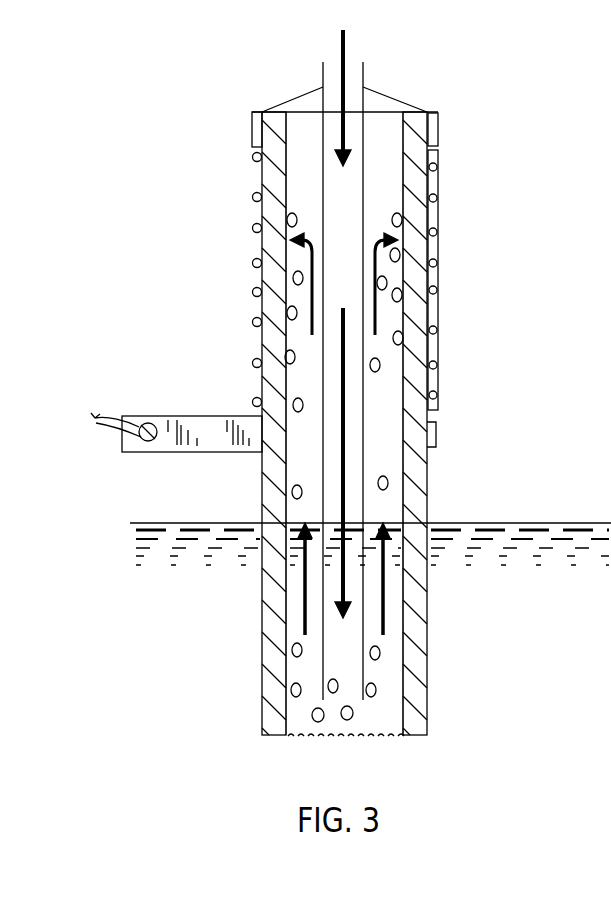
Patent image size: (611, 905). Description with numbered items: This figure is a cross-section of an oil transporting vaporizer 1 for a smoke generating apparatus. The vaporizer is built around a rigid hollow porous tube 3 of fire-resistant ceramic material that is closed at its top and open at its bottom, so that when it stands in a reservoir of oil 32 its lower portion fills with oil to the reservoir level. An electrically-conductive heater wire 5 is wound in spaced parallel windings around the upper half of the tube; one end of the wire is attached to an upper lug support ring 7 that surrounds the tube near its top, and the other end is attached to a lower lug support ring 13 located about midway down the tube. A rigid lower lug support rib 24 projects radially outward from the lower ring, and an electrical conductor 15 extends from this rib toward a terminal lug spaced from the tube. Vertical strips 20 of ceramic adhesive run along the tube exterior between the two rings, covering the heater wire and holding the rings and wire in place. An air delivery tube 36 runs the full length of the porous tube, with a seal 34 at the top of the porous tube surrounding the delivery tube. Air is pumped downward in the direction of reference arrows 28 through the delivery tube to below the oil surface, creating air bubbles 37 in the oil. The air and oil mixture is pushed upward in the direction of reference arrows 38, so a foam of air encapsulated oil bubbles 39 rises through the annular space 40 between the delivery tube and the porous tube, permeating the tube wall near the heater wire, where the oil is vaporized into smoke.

The oil transporting vaporizer 1 is at (456, 505).
The porous tube 3 is at (262, 578).
The heater wire 5 is at (257, 228).
The upper lug support ring 7 is at (438, 130).
The lower lug support ring 13 is at (436, 437).
The electrical conductor 15 is at (93, 424).
The vertical strips of adhesive 20 is at (440, 272).
The lower lug support rib 24 is at (207, 416).
The reference arrows 28 is at (346, 50).
The oil 32 is at (465, 527).
The seal 34 is at (396, 97).
The air delivery tube 36 is at (323, 172).
The air bubbles 37 is at (263, 733).
The reference arrows 38 is at (290, 700).
The air encapsulated oil bubbles 39 is at (400, 222).
The annular space 40 is at (383, 395).